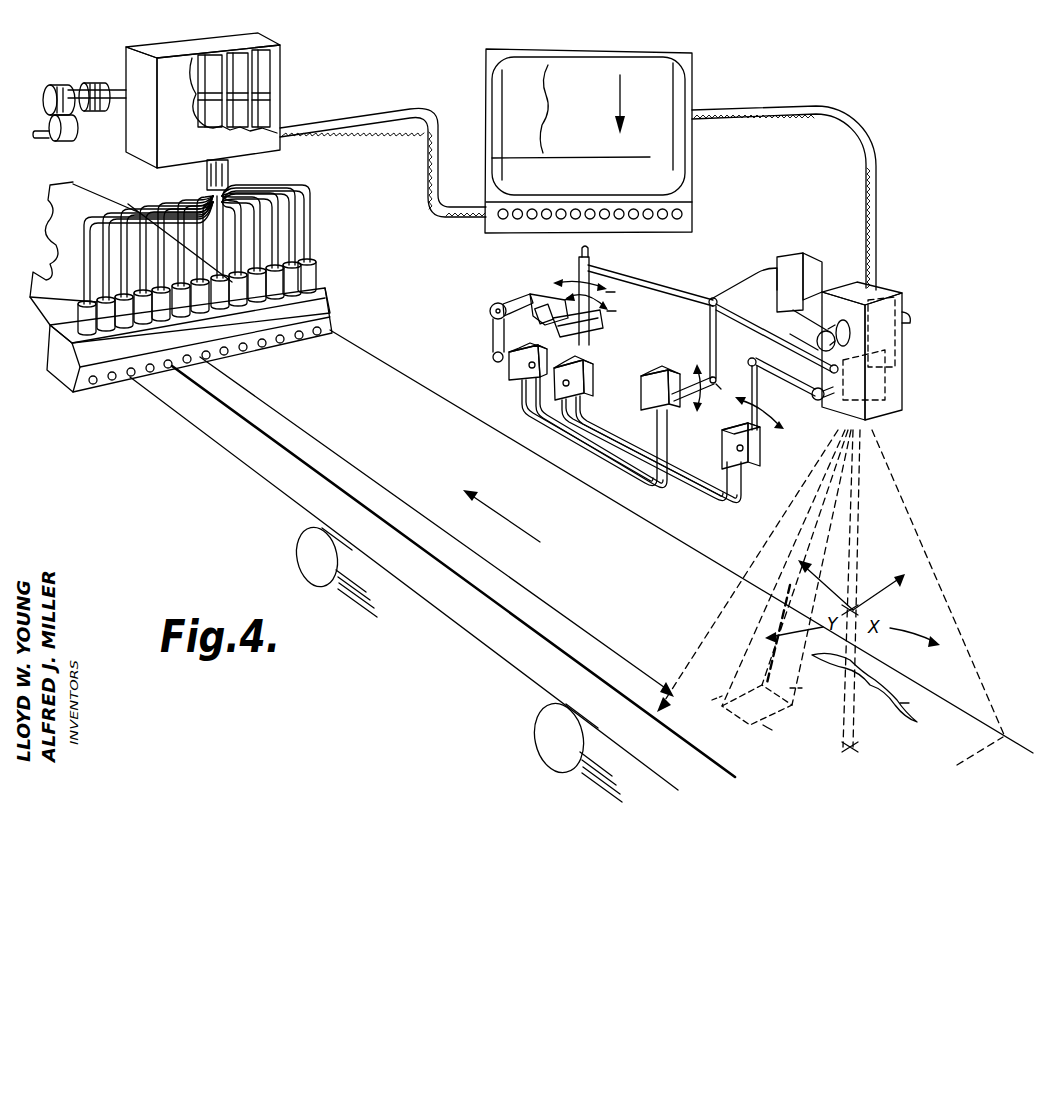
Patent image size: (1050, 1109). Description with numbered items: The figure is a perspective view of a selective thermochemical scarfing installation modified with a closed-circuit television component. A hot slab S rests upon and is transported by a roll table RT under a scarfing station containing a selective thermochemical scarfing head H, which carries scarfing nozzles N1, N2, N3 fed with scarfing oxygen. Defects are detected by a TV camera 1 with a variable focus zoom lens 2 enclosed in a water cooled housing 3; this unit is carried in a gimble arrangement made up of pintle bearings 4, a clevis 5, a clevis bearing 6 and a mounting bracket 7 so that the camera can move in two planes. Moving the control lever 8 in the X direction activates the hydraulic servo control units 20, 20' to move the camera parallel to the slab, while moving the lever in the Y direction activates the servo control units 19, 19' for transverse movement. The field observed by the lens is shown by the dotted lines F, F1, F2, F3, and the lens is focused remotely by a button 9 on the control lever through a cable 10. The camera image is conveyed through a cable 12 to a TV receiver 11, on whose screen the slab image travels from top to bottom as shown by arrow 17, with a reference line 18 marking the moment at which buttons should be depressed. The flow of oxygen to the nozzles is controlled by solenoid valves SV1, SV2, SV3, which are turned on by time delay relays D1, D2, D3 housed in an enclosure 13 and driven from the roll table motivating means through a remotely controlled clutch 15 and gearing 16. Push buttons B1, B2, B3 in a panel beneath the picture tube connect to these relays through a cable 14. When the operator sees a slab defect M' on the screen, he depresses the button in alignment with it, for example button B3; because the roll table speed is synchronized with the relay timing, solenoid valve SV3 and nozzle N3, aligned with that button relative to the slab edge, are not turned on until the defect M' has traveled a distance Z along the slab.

The TV camera 1 is at (887, 330).
The variable focus (zoom) lens 2 is at (887, 377).
The water cooled housing 3 is at (903, 398).
The pintle bearings 4 is at (842, 322).
The clevis 5 is at (816, 300).
The clevis bearing 6 is at (793, 310).
The mounting bracket 7 is at (797, 255).
The control lever 8 is at (578, 262).
The button 9 is at (591, 250).
The cable 10 is at (660, 296).
The TV receiver 11 is at (536, 50).
The cable 12 is at (877, 212).
The enclosure 13 is at (153, 47).
The cable 14 is at (345, 123).
The remotely controlled clutch 15 is at (97, 83).
The gearing 16 is at (53, 86).
The arrow 17 is at (622, 82).
The reference line 18 is at (650, 157).
The servo control unit 19 is at (567, 415).
The hydraulic servo control unit 20 is at (604, 429).
The servo control unit 19' is at (648, 400).
The hydraulic servo control unit 20' is at (723, 446).
The push button B1 is at (502, 220).
The push button B2 is at (517, 220).
The push button B3 is at (532, 220).
The time delay relay D1 is at (263, 67).
The time delay relay D2 is at (237, 62).
The time delay relay D3 is at (212, 58).
The field observed F is at (907, 498).
The field observed F1 is at (855, 528).
The field observed F2 is at (790, 508).
The field observed F3 is at (843, 475).
The selective thermochemical scarfing head H is at (100, 350).
The slab defect M' is at (735, 373).
The scarfing nozzle N1 is at (330, 332).
The scarfing nozzle N2 is at (312, 338).
The scarfing nozzle N3 is at (300, 338).
The roll table RT is at (550, 718).
The hot slab S is at (425, 647).
The solenoid valve SV1 is at (312, 280).
The solenoid valve SV2 is at (306, 266).
The solenoid valve SV3 is at (295, 262).
The distance Z is at (462, 516).